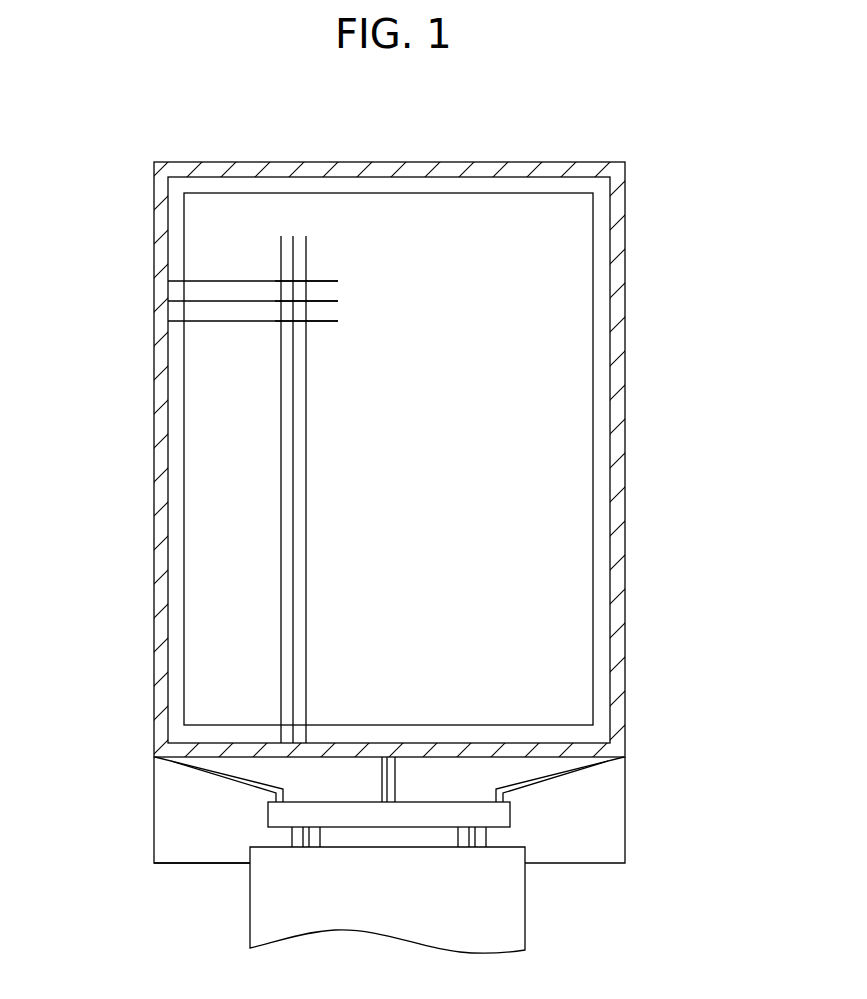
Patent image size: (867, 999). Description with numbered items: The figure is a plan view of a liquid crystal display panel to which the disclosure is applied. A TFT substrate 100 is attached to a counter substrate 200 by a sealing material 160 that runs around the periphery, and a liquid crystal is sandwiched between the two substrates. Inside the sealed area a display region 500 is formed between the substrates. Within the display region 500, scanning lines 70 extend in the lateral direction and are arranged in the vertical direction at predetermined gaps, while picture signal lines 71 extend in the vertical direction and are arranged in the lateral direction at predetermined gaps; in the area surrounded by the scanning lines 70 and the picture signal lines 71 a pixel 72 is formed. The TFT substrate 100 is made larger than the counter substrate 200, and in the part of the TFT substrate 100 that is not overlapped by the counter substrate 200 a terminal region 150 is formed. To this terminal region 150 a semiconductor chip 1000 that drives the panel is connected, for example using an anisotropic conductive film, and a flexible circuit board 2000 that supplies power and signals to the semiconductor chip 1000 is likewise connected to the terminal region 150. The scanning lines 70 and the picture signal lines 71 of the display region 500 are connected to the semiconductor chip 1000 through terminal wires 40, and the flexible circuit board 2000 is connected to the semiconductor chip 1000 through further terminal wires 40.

The counter substrate 200 is at (153, 613).
The sealing material 160 is at (618, 583).
The display region 500 is at (550, 420).
The scanning lines 70 is at (230, 327).
The picture signal lines 71 is at (307, 443).
The pixel 72 is at (300, 292).
The TFT substrate 100 is at (153, 802).
The terminal region 150 is at (198, 850).
The terminal wires 40 is at (572, 776).
The semiconductor chip 1000 is at (512, 812).
The flexible circuit board 2000 is at (525, 905).